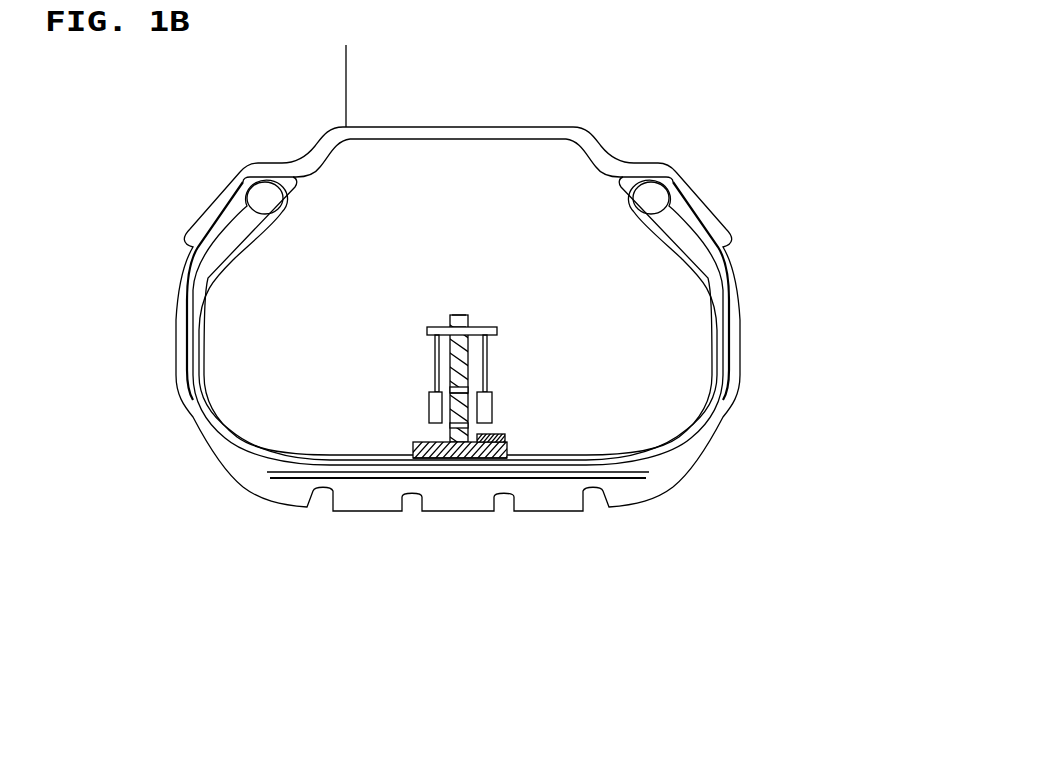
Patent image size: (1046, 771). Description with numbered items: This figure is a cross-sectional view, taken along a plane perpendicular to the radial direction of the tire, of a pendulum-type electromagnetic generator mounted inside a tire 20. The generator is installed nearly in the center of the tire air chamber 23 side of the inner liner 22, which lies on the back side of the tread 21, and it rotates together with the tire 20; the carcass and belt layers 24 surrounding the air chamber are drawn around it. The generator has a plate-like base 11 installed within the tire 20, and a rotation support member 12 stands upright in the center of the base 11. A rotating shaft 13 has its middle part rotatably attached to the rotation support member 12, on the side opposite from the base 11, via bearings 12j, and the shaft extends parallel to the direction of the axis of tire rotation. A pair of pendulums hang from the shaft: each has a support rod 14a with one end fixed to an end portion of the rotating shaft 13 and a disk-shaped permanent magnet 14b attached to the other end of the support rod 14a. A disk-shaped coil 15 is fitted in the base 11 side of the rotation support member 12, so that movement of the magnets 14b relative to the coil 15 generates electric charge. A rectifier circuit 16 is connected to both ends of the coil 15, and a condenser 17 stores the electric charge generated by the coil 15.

The tire 20 is at (741, 305).
The tread 21 is at (370, 502).
The inner liner 22 is at (334, 456).
The tire air chamber 23 is at (258, 317).
The carcass ply 24 is at (437, 477).
The base 11 is at (414, 442).
The rotation support member 12 is at (468, 349).
The bearings 12j is at (448, 323).
The rotating shaft 13 is at (483, 325).
The support rod 14a is at (437, 370).
The permanent magnet 14b is at (429, 407).
The coil 15 is at (469, 386).
The rectifier circuit 16 is at (483, 458).
The condenser 17 is at (503, 457).